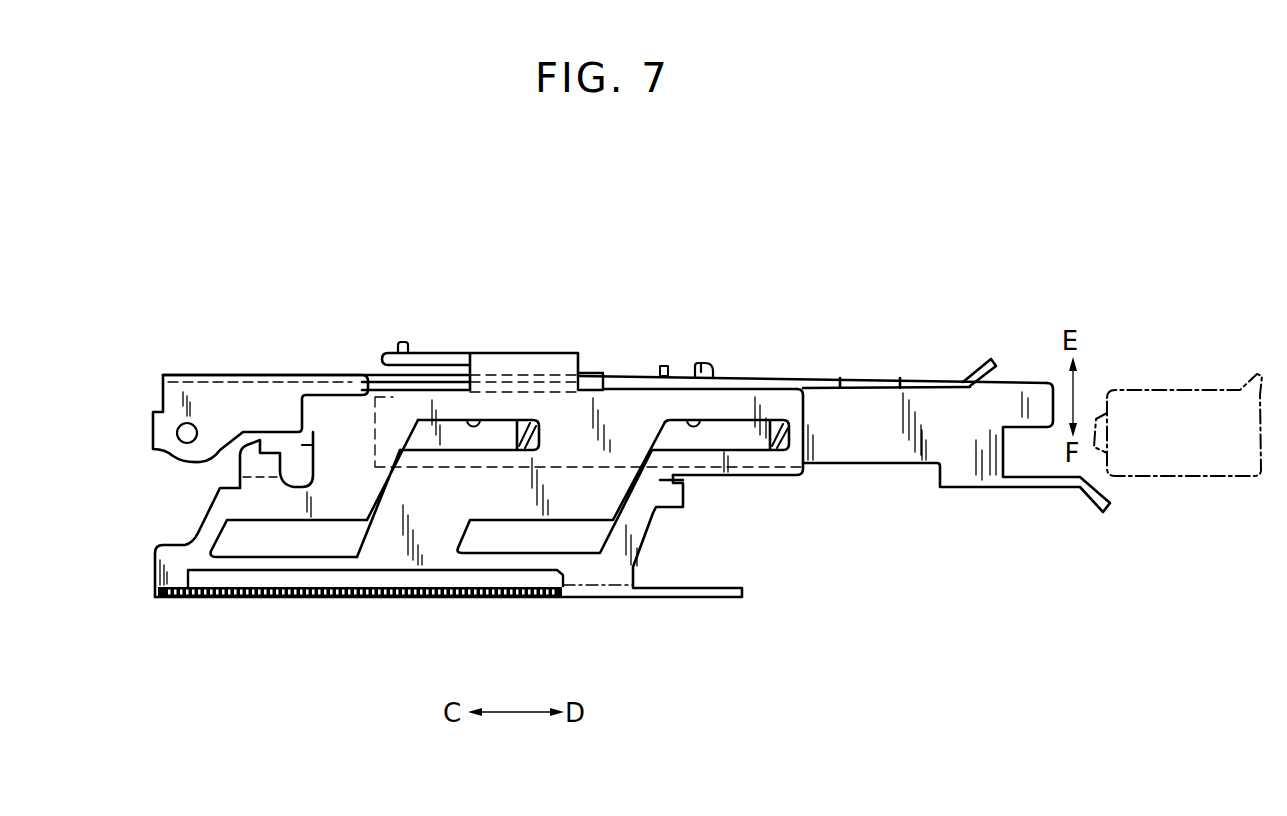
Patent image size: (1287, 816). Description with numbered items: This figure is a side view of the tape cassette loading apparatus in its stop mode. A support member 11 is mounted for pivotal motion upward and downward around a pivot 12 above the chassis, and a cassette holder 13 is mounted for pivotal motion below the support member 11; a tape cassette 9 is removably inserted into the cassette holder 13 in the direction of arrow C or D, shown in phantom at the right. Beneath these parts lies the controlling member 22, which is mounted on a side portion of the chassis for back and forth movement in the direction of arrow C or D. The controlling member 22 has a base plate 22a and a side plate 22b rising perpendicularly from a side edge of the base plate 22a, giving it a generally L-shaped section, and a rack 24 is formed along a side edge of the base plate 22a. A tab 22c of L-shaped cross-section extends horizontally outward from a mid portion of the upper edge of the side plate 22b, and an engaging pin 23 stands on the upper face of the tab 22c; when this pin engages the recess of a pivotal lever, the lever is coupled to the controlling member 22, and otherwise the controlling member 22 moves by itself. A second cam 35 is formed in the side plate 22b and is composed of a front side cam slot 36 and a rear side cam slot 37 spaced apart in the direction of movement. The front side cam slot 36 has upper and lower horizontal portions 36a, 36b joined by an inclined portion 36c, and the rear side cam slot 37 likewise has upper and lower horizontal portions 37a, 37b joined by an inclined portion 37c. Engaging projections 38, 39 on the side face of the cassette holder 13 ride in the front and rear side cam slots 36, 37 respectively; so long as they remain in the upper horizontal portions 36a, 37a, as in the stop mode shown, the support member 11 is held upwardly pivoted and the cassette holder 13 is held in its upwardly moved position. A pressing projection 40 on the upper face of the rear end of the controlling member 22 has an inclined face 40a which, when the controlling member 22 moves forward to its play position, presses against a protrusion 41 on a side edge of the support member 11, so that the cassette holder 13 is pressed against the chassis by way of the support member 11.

The tape cassette 9 is at (1180, 390).
The support member 11 is at (213, 375).
The pivot 12 is at (177, 433).
The cassette holder 13 is at (928, 378).
The controlling member 22 is at (780, 377).
The base plate 22a is at (697, 600).
The side plate 22b is at (743, 377).
The tab 22c is at (450, 353).
The engaging pin 23 is at (402, 343).
The rack 24 is at (447, 582).
The second cam 35 is at (472, 522).
The front side cam slot 36 is at (570, 523).
The upper horizontal portion 36a is at (677, 377).
The lower horizontal portion 36b is at (585, 521).
The inclined portion 36c is at (627, 375).
The rear side cam slot 37 is at (353, 498).
The upper horizontal portion 37a is at (481, 427).
The lower horizontal portion 37b is at (243, 542).
The inclined portion 37c is at (367, 527).
The engaging projection 38 is at (823, 388).
The engaging projection 39 is at (510, 424).
The pressing projection 40 is at (240, 450).
The inclined face 40a is at (313, 468).
The protrusion 41 is at (590, 377).